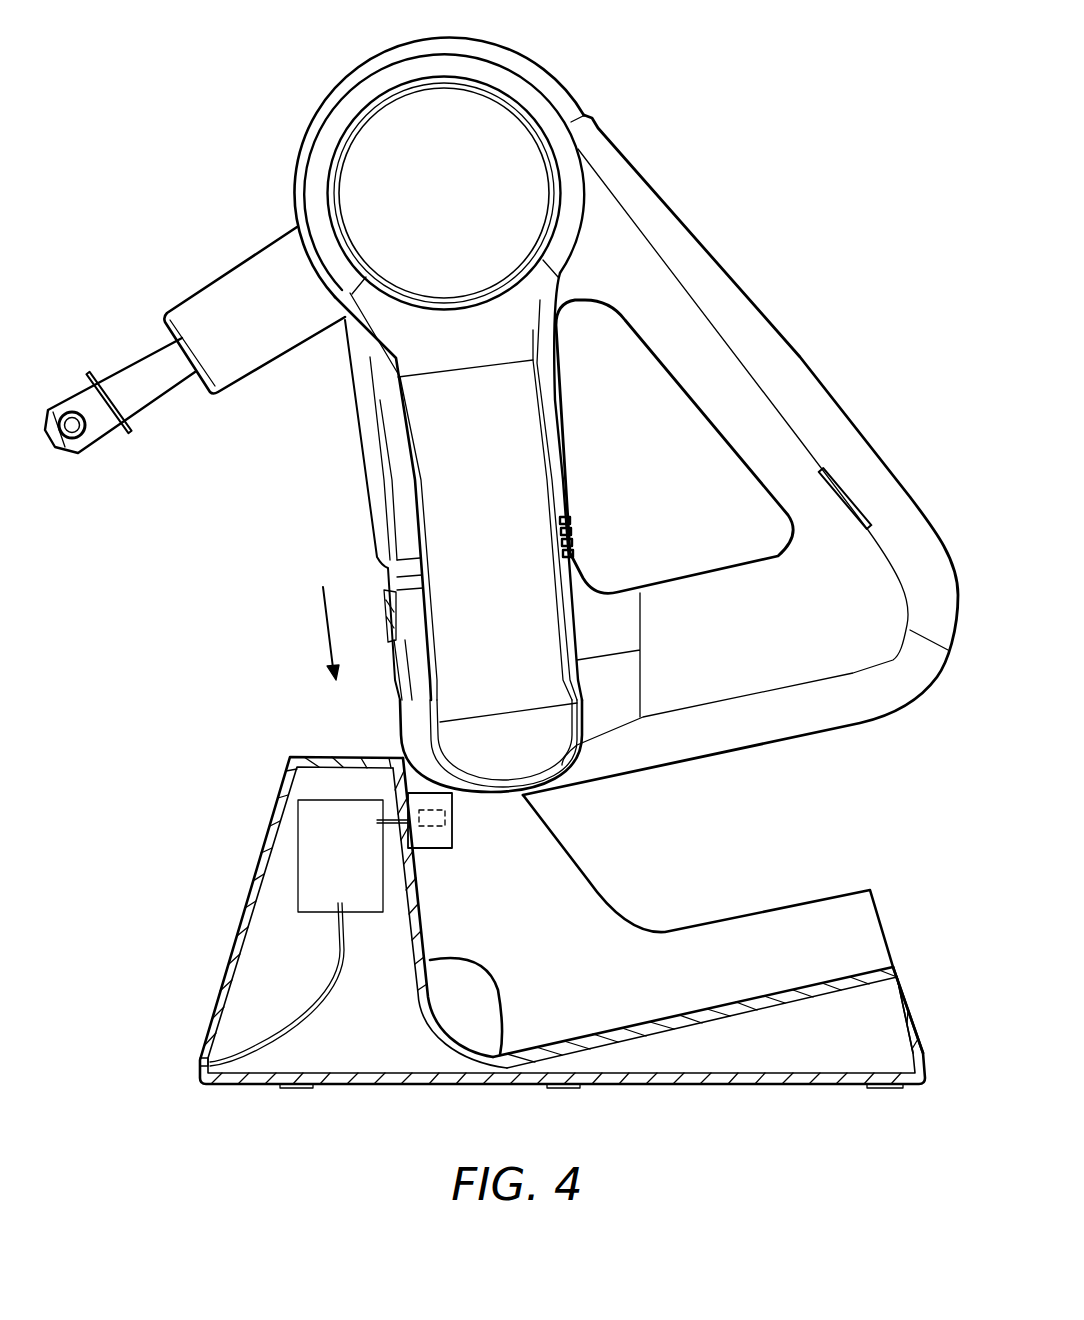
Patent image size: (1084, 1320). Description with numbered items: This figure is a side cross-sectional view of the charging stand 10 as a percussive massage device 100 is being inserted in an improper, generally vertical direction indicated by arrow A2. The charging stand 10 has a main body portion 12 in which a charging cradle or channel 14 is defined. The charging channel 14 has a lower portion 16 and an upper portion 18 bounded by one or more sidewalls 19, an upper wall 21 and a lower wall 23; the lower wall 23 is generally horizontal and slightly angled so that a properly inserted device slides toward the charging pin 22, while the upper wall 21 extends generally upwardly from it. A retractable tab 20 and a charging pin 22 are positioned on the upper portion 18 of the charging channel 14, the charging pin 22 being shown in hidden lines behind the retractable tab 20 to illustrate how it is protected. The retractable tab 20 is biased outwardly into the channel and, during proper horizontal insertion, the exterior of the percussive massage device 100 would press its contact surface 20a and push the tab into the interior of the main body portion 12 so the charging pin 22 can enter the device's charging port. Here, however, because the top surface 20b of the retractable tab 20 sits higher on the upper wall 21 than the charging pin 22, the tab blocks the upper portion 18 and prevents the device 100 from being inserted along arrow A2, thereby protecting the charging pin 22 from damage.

The charging stand 10 is at (187, 1097).
The main body portion 12 is at (348, 1087).
The charging channel 14 is at (870, 832).
The lower portion 16 is at (765, 965).
The upper portion 18 is at (458, 902).
The sidewall 19 is at (627, 937).
The retractable tab 20 is at (447, 837).
The contact surface 20a is at (453, 820).
The top surface 20b is at (407, 760).
The upper wall 21 is at (500, 1055).
The charging pin 22 is at (417, 820).
The lower wall 23 is at (853, 973).
The percussive massage device 100 is at (716, 284).
The arrow A2 is at (326, 622).